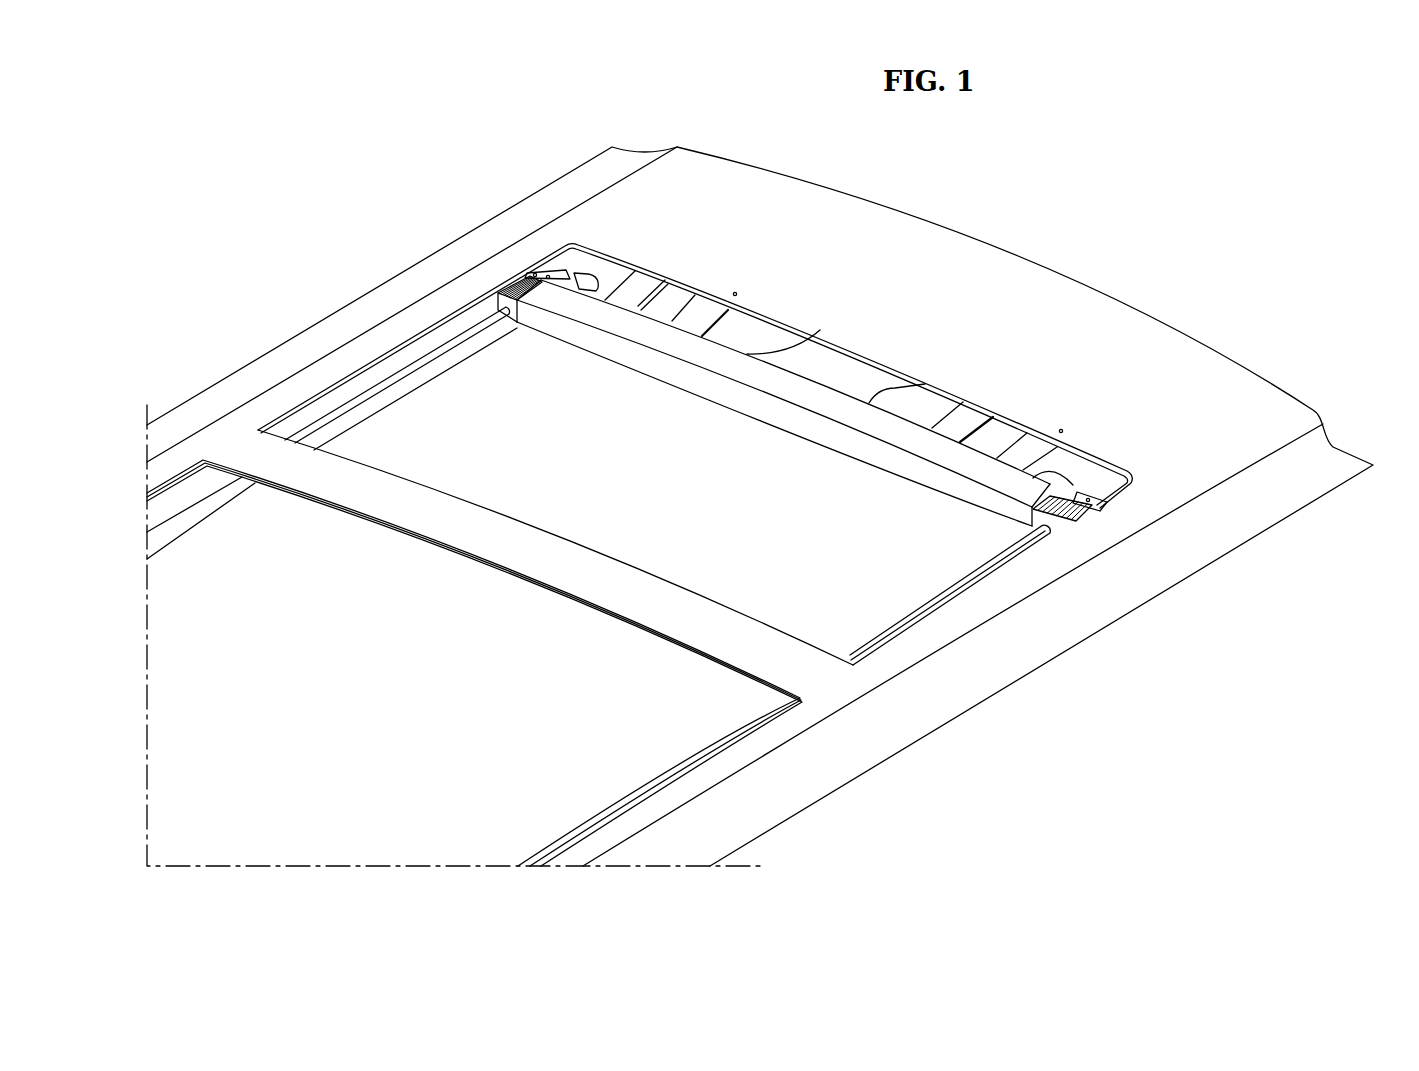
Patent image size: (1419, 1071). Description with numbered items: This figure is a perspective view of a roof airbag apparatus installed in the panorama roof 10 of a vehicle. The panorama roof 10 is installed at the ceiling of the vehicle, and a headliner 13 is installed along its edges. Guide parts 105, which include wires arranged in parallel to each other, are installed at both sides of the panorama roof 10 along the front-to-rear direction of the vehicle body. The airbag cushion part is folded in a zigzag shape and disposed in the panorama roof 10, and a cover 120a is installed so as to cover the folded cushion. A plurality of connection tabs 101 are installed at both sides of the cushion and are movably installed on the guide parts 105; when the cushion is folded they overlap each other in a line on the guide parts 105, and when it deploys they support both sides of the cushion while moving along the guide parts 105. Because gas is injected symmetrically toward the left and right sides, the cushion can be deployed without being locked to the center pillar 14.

The panorama roof 10 is at (1075, 278).
The headliner 13 is at (181, 487).
The center pillar 14 is at (735, 638).
The connection tabs 101 is at (1083, 523).
The guide parts 105 is at (407, 375).
The cover 120a is at (813, 397).